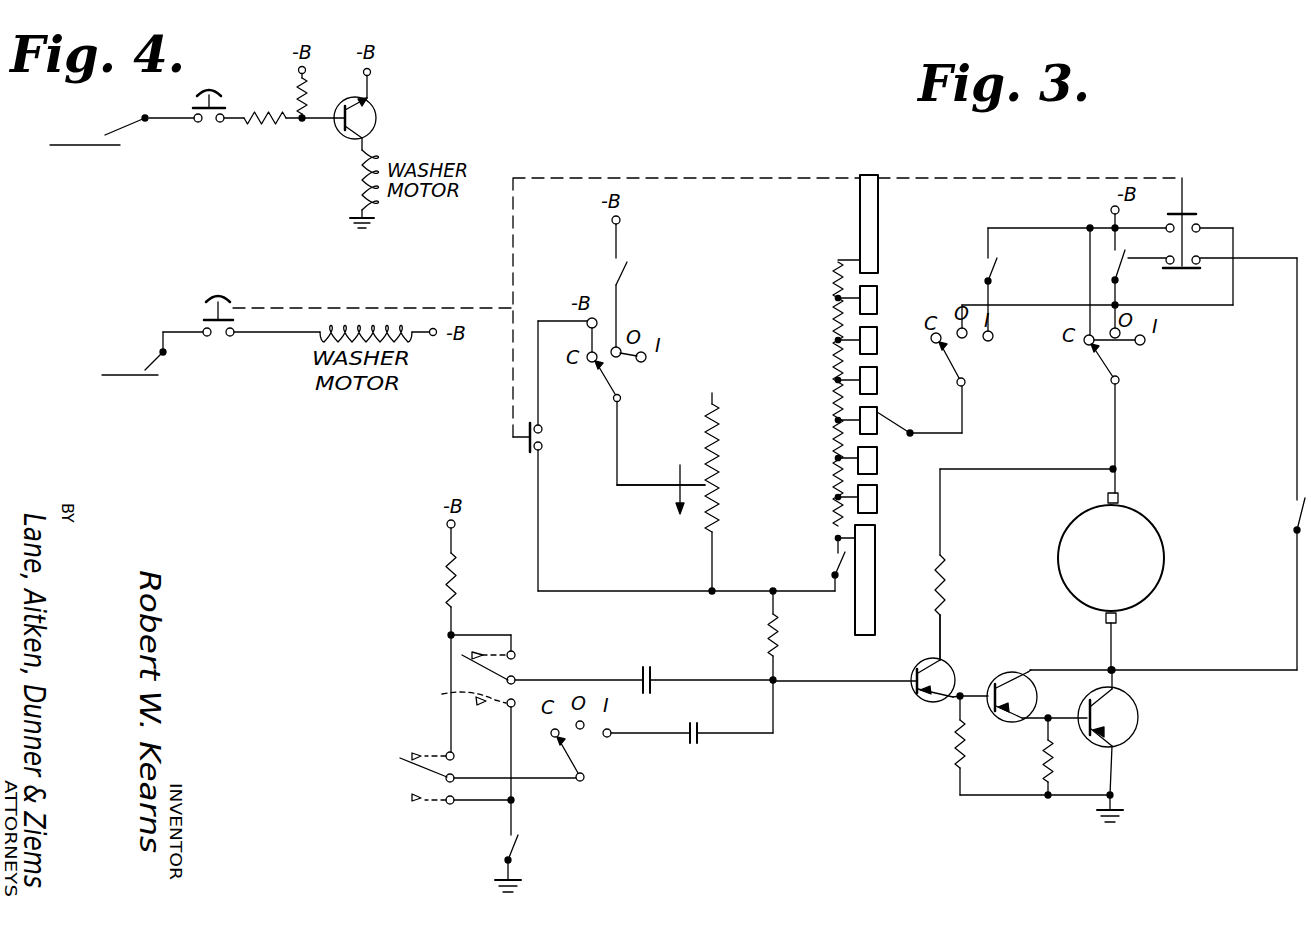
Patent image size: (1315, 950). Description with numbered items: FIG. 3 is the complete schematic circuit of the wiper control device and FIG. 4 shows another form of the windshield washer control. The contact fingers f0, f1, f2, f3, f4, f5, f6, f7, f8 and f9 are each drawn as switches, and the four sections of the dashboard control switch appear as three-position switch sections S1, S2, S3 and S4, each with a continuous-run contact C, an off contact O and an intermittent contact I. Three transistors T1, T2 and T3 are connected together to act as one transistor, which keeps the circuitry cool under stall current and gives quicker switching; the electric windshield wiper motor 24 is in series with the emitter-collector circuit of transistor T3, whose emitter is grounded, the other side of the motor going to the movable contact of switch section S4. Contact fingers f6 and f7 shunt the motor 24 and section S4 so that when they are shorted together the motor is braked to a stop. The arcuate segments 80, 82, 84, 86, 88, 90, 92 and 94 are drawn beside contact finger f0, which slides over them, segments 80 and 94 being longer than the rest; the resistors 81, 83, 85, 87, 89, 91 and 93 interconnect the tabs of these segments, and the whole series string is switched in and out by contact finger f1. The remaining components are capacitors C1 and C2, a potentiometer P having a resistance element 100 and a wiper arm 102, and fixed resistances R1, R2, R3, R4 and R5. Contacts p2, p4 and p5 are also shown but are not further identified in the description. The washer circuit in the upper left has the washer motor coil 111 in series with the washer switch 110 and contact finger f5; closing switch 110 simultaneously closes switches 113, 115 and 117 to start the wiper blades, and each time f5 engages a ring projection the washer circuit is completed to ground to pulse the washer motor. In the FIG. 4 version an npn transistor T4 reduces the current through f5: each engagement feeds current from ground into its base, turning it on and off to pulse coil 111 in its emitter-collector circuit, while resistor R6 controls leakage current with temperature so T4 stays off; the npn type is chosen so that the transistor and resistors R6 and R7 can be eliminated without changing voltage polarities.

In FIG. 3, the electric windshield wiper motor 24 is at (1164, 560).
In FIG. 3, the arcuate segment 80 is at (873, 268).
In FIG. 3, the resistor 81 is at (837, 280).
In FIG. 3, the arcuate segment 82 is at (878, 303).
In FIG. 3, the resistor 83 is at (833, 316).
In FIG. 3, the arcuate segment 84 is at (877, 340).
In FIG. 3, the resistor 85 is at (833, 362).
In FIG. 3, the arcuate segment 86 is at (878, 386).
In FIG. 3, the resistor 87 is at (833, 402).
In FIG. 3, the arcuate segment 88 is at (877, 415).
In FIG. 3, the resistor 89 is at (833, 441).
In FIG. 3, the arcuate segment 90 is at (877, 462).
In FIG. 3, the resistor 91 is at (833, 478).
In FIG. 3, the arcuate segment 92 is at (877, 500).
In FIG. 3, the resistor 93 is at (833, 526).
In FIG. 3, the arcuate segment 94 is at (872, 602).
In FIG. 3, the resistance element 100 is at (722, 433).
In FIG. 3, the wiper arm 102 is at (642, 485).
In FIG. 4, the washer switch 110 is at (238, 85).
In FIG. 4, the washer motor coil 111 is at (362, 332).
In FIG. 3, the switch 113 is at (526, 449).
In FIG. 3, the switch 115 is at (1195, 212).
In FIG. 3, the switch 117 is at (1185, 270).
In FIG. 3, the potentiometer P is at (687, 450).
In FIG. 3, the contact finger f0 is at (898, 426).
In FIG. 3, the contact finger f1 is at (838, 565).
In FIG. 3, the contact finger f2 is at (398, 762).
In FIG. 3, the contact finger f3 is at (516, 673).
In FIG. 3, the contact finger f4 is at (520, 858).
In FIG. 4, the contact finger f5 is at (138, 122).
In FIG. 3, the contact finger f6 is at (1297, 512).
In FIG. 3, the contact finger f7 is at (1118, 268).
In FIG. 3, the contact finger f8 is at (995, 265).
In FIG. 3, the contact finger f9 is at (622, 270).
In FIG. 3, the movable contact p2 is at (515, 651).
In FIG. 3, the movable contact p4 is at (458, 820).
In FIG. 4, the movable contact p5 is at (100, 147).
In FIG. 3, the switch section S1 is at (581, 751).
In FIG. 3, the switch section S2 is at (616, 374).
In FIG. 3, the switch section S3 is at (952, 354).
In FIG. 3, the switch section S4 is at (1117, 357).
In FIG. 3, the fixed resistance R1 is at (447, 577).
In FIG. 3, the fixed resistance R2 is at (771, 640).
In FIG. 3, the fixed resistance R3 is at (946, 585).
In FIG. 3, the fixed resistance R4 is at (958, 756).
In FIG. 3, the fixed resistance R5 is at (1052, 772).
In FIG. 4, the resistor R6 is at (300, 99).
In FIG. 4, the resistor R7 is at (262, 121).
In FIG. 3, the capacitor C1 is at (641, 672).
In FIG. 3, the capacitor C2 is at (690, 745).
In FIG. 3, the transistor T1 is at (922, 702).
In FIG. 3, the transistor T2 is at (1024, 722).
In FIG. 3, the transistor T3 is at (1140, 718).
In FIG. 4, the transistor T4 is at (378, 110).